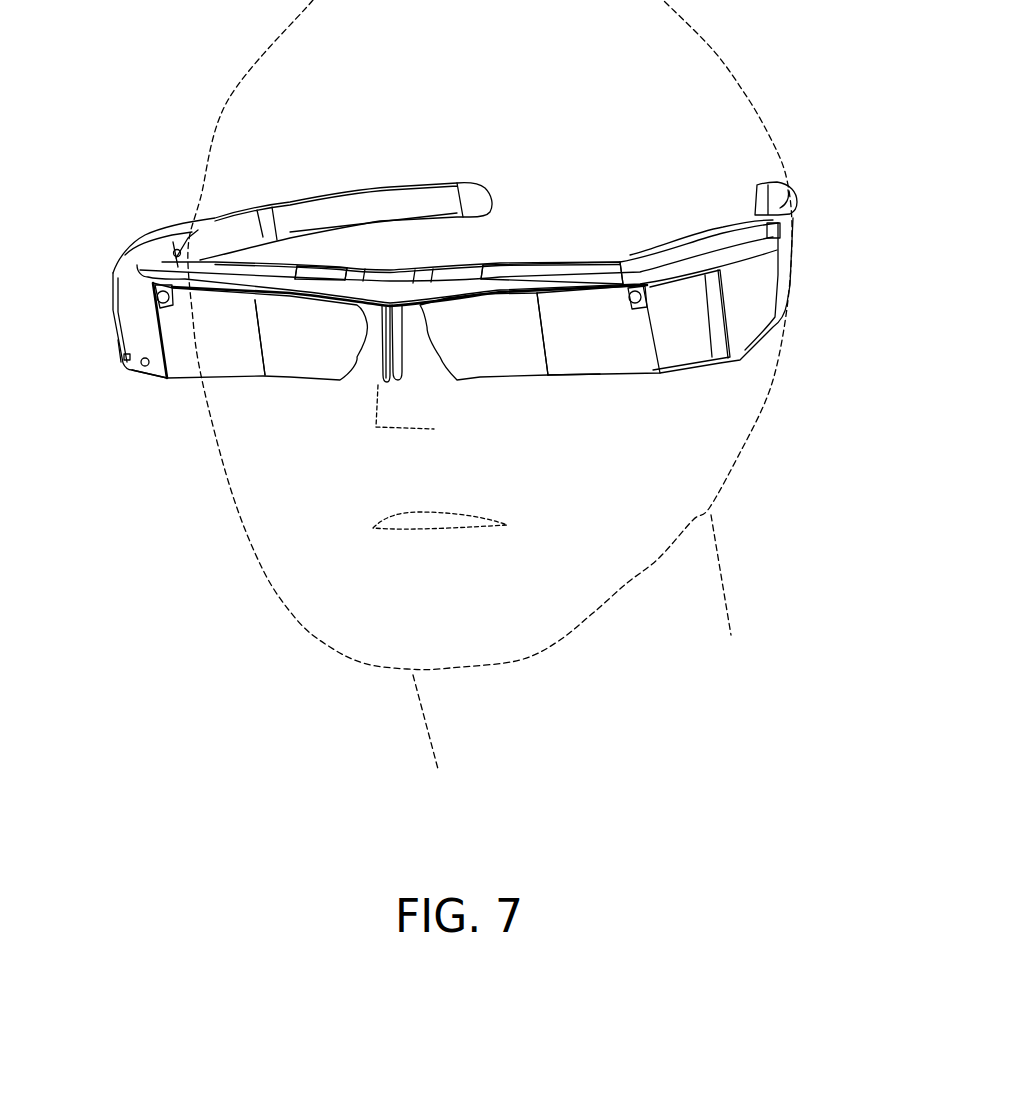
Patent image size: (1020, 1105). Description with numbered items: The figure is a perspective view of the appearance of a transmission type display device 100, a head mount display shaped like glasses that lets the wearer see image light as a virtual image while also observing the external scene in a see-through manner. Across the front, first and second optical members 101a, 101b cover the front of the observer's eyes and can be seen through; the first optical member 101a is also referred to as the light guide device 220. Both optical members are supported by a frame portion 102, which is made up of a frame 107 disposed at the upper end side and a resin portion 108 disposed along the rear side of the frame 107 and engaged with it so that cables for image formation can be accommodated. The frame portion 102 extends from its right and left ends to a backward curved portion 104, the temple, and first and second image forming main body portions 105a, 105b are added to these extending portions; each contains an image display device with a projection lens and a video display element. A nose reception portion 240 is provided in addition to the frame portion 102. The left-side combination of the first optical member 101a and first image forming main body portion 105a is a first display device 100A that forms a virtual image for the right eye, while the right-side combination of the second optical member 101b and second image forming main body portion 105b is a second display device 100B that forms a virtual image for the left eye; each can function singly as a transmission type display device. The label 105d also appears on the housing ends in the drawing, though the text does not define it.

The transmission type display device 100 is at (801, 29).
The first display device 100A is at (198, 383).
The second display device 100B is at (558, 398).
The first optical member 101a is at (283, 353).
The second optical member 101b is at (517, 348).
The light guide device 220 is at (403, 392).
The frame portion 102 is at (539, 272).
The backward curved portion 104 is at (307, 200).
The first image forming main body portion 105a is at (127, 320).
The second image forming main body portion 105b is at (667, 353).
The housing end portion 105d is at (128, 258).
The frame 107 is at (318, 278).
The resin portion 108 is at (514, 263).
The nose reception portion 240 is at (453, 385).